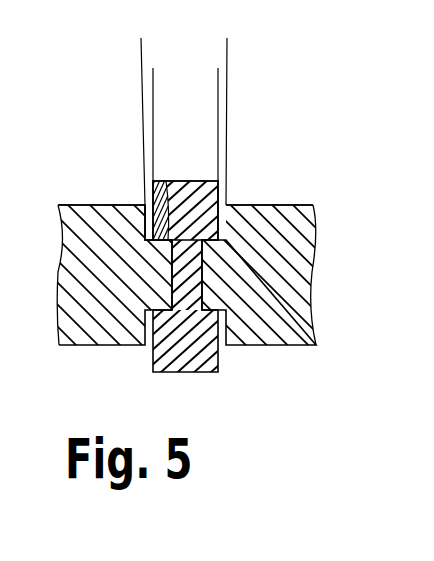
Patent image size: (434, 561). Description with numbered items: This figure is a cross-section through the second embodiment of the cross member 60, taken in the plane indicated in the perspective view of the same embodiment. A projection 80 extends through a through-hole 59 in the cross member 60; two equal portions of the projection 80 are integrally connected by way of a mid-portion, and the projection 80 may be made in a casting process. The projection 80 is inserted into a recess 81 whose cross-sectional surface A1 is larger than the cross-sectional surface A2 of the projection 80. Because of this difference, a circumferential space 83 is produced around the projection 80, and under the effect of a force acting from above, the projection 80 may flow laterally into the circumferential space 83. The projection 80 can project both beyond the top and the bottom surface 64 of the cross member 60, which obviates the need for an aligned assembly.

The through-hole 59 is at (172, 265).
The cross member 60 is at (293, 265).
The surface 64 is at (278, 205).
The projection 80 is at (198, 181).
The recess 81 is at (160, 200).
The circumferential space 83 is at (148, 222).
The cross-sectional surface of the recess A1 is at (227, 38).
The cross-sectional surface of the projection A2 is at (218, 68).